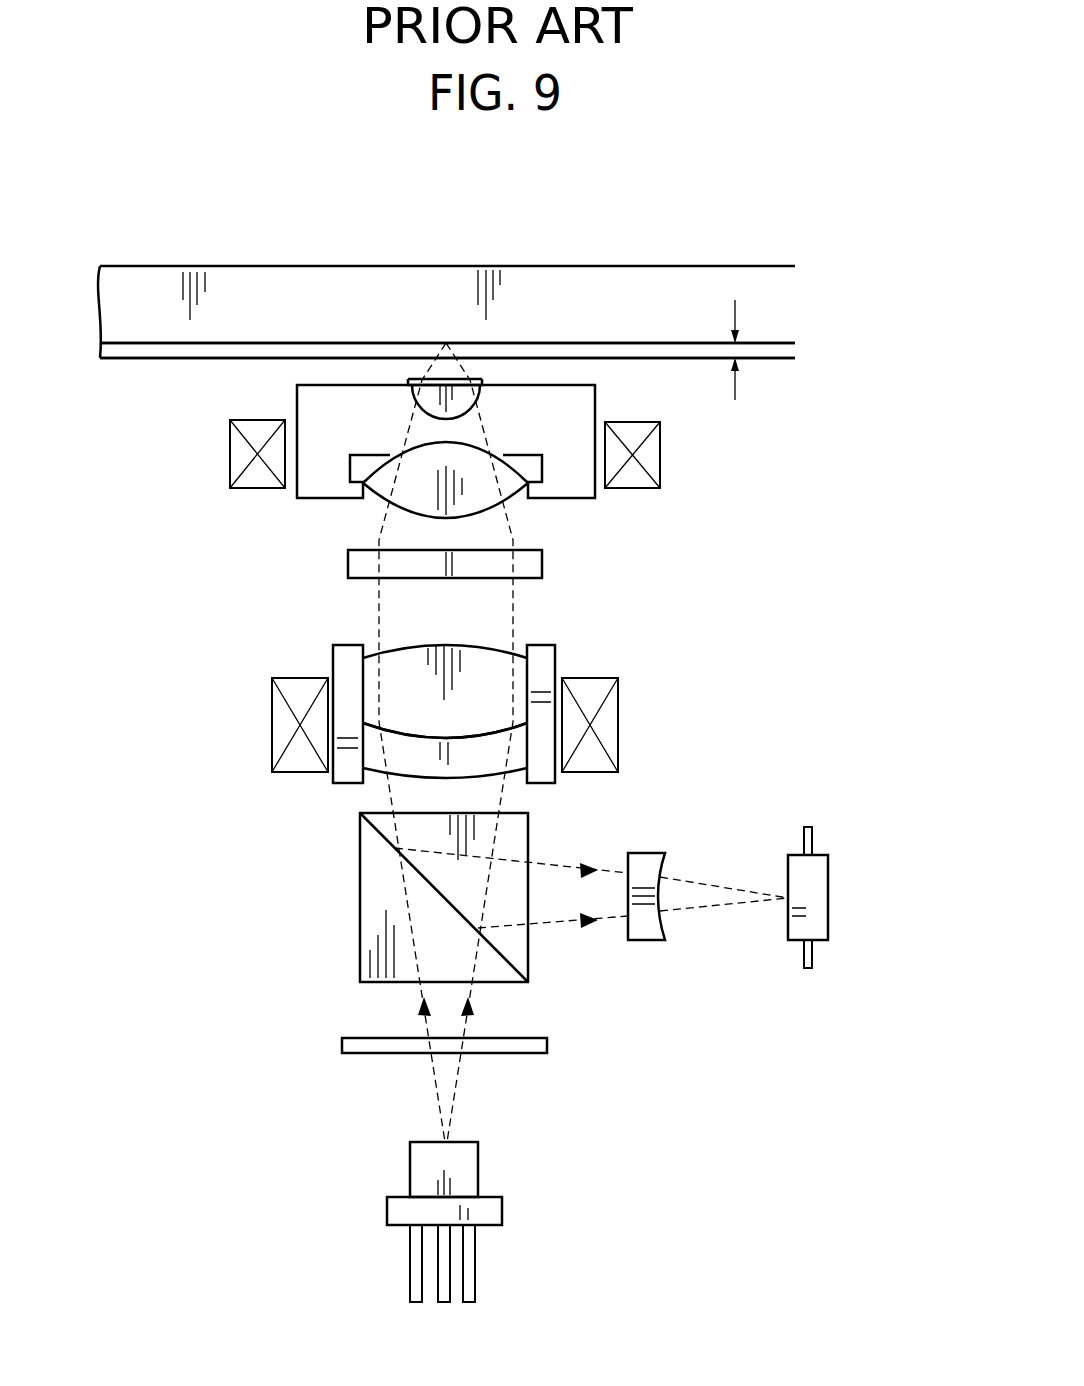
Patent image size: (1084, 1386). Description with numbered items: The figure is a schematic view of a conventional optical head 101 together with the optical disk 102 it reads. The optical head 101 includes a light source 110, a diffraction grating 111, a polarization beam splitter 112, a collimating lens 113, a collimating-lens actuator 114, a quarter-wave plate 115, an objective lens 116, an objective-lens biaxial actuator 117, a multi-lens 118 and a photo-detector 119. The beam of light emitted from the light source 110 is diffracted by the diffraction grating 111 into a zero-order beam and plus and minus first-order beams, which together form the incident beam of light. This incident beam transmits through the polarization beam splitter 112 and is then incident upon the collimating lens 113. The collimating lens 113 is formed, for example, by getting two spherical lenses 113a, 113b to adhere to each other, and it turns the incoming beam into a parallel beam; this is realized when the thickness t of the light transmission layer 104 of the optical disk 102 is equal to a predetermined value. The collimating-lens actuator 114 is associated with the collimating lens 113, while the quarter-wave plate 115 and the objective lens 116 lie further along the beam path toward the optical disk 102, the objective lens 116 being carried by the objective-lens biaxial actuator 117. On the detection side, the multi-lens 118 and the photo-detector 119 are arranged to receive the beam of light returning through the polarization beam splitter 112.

The optical head 101 is at (300, 1180).
The optical disk 102 is at (122, 380).
The light transmission layer 104 is at (661, 352).
The light source 110 is at (473, 1150).
The diffraction grating 111 is at (350, 1045).
The polarization beam splitter 112 is at (368, 872).
The collimating lens 113 is at (596, 711).
The spherical lens 113a is at (520, 742).
The spherical lens 113b is at (520, 676).
The collimating-lens actuator 114 is at (545, 775).
The quarter-wave plate 115 is at (356, 562).
The objective lens 116 is at (467, 395).
The objective-lens biaxial actuator 117 is at (308, 404).
The multi-lens 118 is at (652, 935).
The photo-detector 119 is at (823, 882).